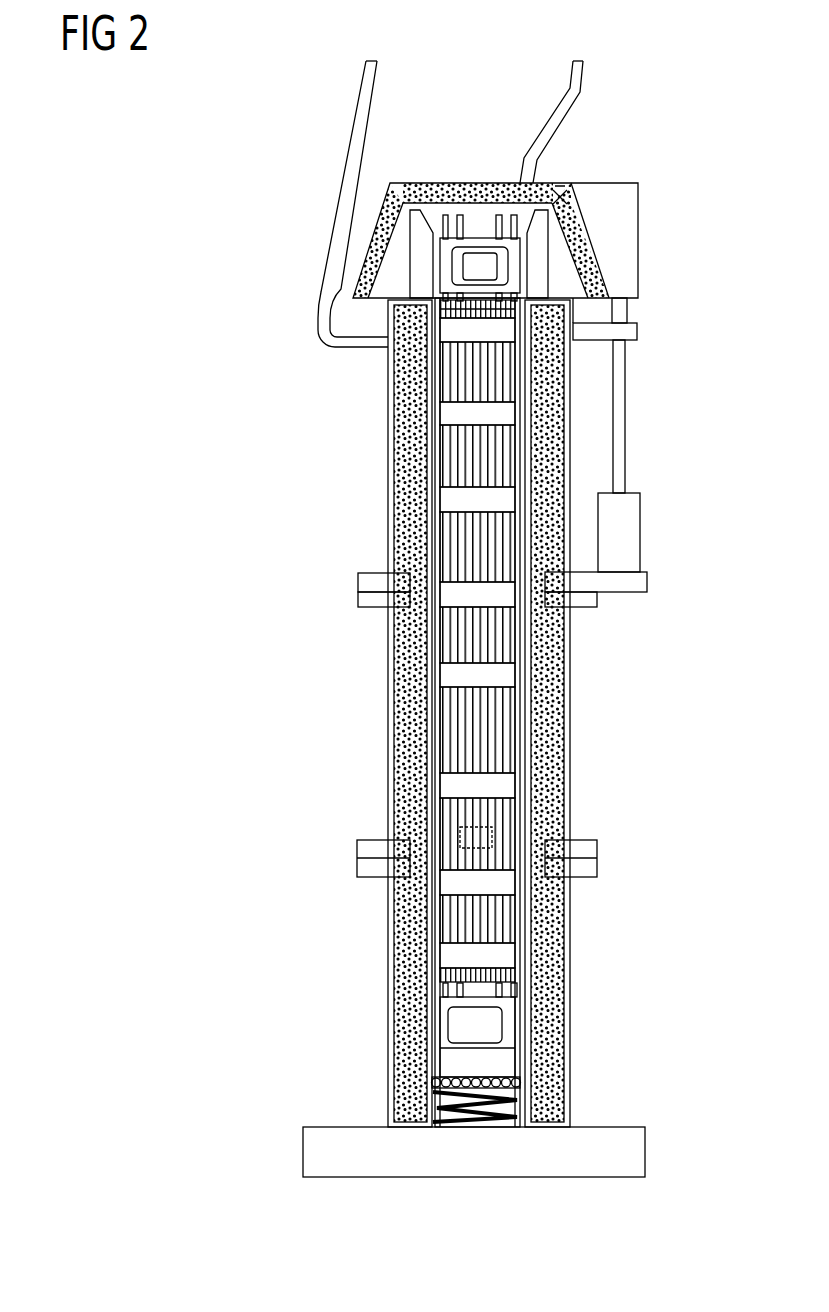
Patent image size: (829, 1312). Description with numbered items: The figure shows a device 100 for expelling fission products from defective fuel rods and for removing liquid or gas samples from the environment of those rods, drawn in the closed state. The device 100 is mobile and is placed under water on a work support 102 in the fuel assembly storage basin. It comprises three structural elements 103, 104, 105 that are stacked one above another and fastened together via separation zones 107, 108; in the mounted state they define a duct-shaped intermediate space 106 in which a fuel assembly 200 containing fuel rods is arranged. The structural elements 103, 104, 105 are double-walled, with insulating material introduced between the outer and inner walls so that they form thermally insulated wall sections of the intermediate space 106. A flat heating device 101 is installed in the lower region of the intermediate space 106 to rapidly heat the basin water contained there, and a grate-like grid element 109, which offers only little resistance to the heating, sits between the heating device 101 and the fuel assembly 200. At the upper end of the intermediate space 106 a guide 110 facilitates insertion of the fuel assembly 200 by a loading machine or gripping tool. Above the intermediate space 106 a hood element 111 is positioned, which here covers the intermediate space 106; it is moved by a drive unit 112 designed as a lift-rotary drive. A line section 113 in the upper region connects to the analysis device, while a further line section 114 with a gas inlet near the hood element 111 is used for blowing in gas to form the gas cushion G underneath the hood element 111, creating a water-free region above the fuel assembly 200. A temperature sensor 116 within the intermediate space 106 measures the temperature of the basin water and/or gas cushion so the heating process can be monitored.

The device 100 is at (708, 68).
The heating device 101 is at (507, 1110).
The work support 102 is at (630, 1150).
The structural element 103 is at (553, 923).
The structural element 104 is at (553, 690).
The structural element 105 is at (397, 453).
The duct-shaped intermediate space 106 is at (507, 817).
The separation zone 107 is at (368, 582).
The separation zone 108 is at (368, 848).
The grate-like grid element 109 is at (497, 1075).
The guide 110 is at (538, 272).
The hood element 111 is at (583, 233).
The drive unit 112 is at (630, 537).
The line section 113 is at (330, 261).
The further line section 114 is at (567, 93).
The temperature sensor 116 is at (473, 835).
The fuel assembly 200 is at (507, 743).
The gas cushion G is at (558, 197).